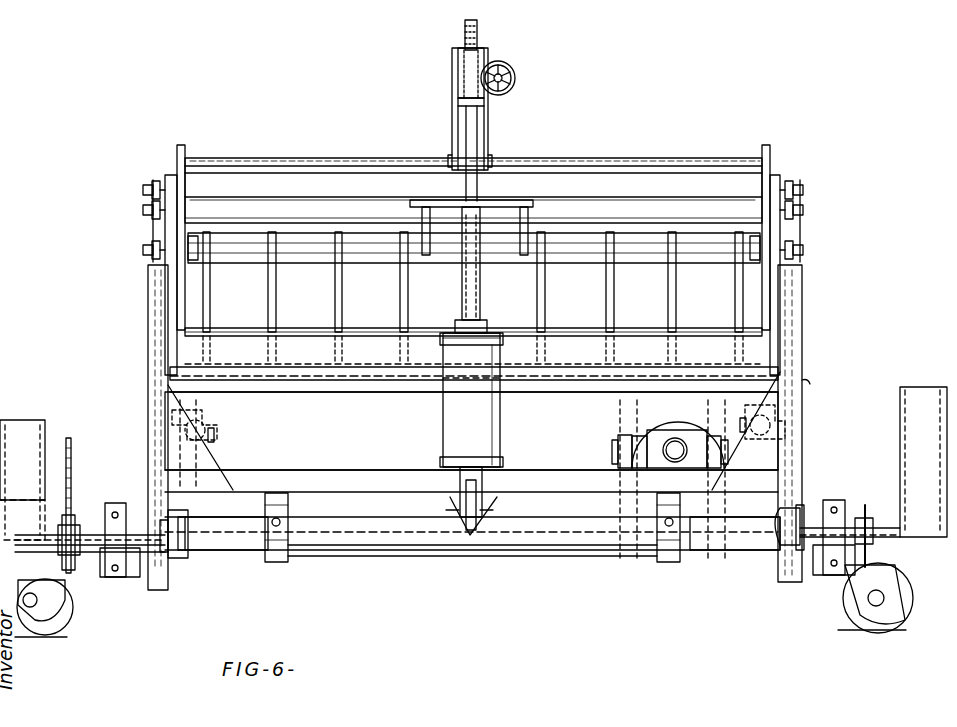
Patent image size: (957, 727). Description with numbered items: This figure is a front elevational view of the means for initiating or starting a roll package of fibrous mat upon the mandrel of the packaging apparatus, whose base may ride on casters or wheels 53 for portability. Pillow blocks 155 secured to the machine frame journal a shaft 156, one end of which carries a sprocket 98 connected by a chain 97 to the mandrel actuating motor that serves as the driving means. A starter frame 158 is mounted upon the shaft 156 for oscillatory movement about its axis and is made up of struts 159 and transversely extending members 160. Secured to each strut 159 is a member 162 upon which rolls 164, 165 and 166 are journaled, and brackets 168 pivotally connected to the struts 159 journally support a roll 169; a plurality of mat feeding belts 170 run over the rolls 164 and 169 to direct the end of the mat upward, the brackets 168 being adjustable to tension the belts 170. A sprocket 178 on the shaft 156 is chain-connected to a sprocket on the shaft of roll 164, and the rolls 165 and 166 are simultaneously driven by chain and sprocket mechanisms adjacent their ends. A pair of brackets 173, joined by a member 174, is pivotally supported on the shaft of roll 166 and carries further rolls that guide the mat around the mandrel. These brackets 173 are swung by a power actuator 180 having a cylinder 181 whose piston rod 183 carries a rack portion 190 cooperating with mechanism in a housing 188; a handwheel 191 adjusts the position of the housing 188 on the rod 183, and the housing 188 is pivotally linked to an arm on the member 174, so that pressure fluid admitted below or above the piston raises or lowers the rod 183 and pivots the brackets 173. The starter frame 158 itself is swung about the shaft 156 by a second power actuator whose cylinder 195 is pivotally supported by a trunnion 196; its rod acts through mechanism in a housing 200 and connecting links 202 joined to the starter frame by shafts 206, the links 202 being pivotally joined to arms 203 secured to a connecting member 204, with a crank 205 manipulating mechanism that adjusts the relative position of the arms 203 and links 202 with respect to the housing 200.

The casters or wheels 53 is at (58, 620).
The chain 97 is at (72, 450).
The sprocket 98 is at (72, 515).
The pillow blocks 155 is at (121, 578).
The shaft 156 is at (240, 540).
The starter frame 158 is at (810, 348).
The struts 159 is at (165, 370).
The transversely extending members 160 is at (322, 392).
The member 162 is at (165, 326).
The roll 164 is at (324, 252).
The roll 165 is at (348, 216).
The roll 166 is at (386, 192).
The brackets 168 is at (185, 328).
The roll 169 is at (584, 334).
The mat feeding belts 170 is at (210, 290).
The brackets 173 is at (184, 150).
The member 174 is at (598, 146).
The sprocket 178 is at (787, 502).
The power actuator 180 is at (441, 449).
The cylinder 181 is at (450, 410).
The piston rod 183 is at (477, 272).
The housing 188 is at (458, 70).
The rack portion 190 is at (477, 26).
The handwheel 191 is at (517, 78).
The cylinder 195 is at (658, 410).
The trunnion 196 is at (618, 440).
The housing 200 is at (658, 428).
The connecting links 202 is at (200, 425).
The arms 203 is at (640, 562).
The connecting member 204 is at (575, 552).
The crank 205 is at (816, 402).
The shafts 206 is at (213, 436).